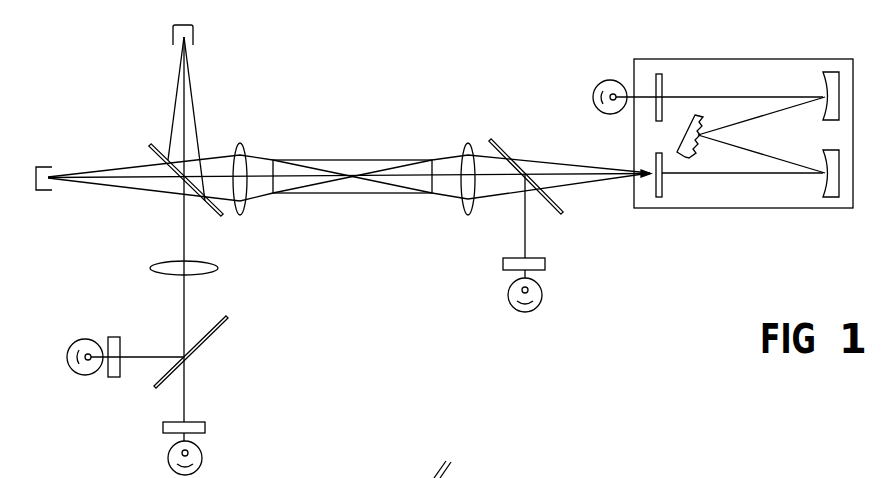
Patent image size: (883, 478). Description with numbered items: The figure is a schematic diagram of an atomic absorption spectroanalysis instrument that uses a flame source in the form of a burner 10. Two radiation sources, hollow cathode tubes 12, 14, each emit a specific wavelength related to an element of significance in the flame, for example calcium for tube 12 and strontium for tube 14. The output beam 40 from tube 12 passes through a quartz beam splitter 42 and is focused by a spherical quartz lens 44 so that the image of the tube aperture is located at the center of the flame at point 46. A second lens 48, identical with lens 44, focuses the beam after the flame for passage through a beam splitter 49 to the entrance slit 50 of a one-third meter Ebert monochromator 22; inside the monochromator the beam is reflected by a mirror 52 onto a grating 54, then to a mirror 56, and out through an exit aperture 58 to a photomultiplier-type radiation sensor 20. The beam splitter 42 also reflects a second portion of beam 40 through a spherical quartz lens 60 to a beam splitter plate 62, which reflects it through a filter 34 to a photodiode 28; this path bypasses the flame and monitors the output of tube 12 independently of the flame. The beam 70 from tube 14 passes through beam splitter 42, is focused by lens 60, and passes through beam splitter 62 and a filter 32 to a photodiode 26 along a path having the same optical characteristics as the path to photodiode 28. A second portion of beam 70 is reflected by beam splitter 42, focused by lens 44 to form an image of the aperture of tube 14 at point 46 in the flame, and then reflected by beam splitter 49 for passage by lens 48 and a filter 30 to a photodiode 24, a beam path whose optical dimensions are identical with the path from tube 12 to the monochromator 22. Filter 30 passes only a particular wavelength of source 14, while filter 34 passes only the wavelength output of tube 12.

The burner 10 is at (322, 140).
The hollow cathode tube 12 is at (44, 166).
The hollow cathode tube 14 is at (172, 36).
The radiation sensor 20 is at (600, 83).
The Ebert monochromator 22 is at (711, 53).
The photodiode 24 is at (509, 300).
The photodiode 26 is at (170, 468).
The photodiode 28 is at (70, 368).
The filter 30 is at (503, 263).
The filter 32 is at (205, 422).
The filter 34 is at (113, 378).
The output beam 40 is at (141, 191).
The quartz beam splitter 42 is at (152, 152).
The spherical quartz lens 44 is at (241, 147).
The image point 46 is at (351, 173).
The second lens 48 is at (467, 143).
The beam splitter 49 is at (497, 138).
The entrance slit 50 is at (656, 185).
The mirror 52 is at (822, 178).
The grating 54 is at (704, 126).
The mirror 56 is at (822, 95).
The exit aperture 58 is at (654, 92).
The spherical quartz lens 60 is at (150, 268).
The beam splitter plate 62 is at (221, 328).
The beam 70 is at (178, 87).